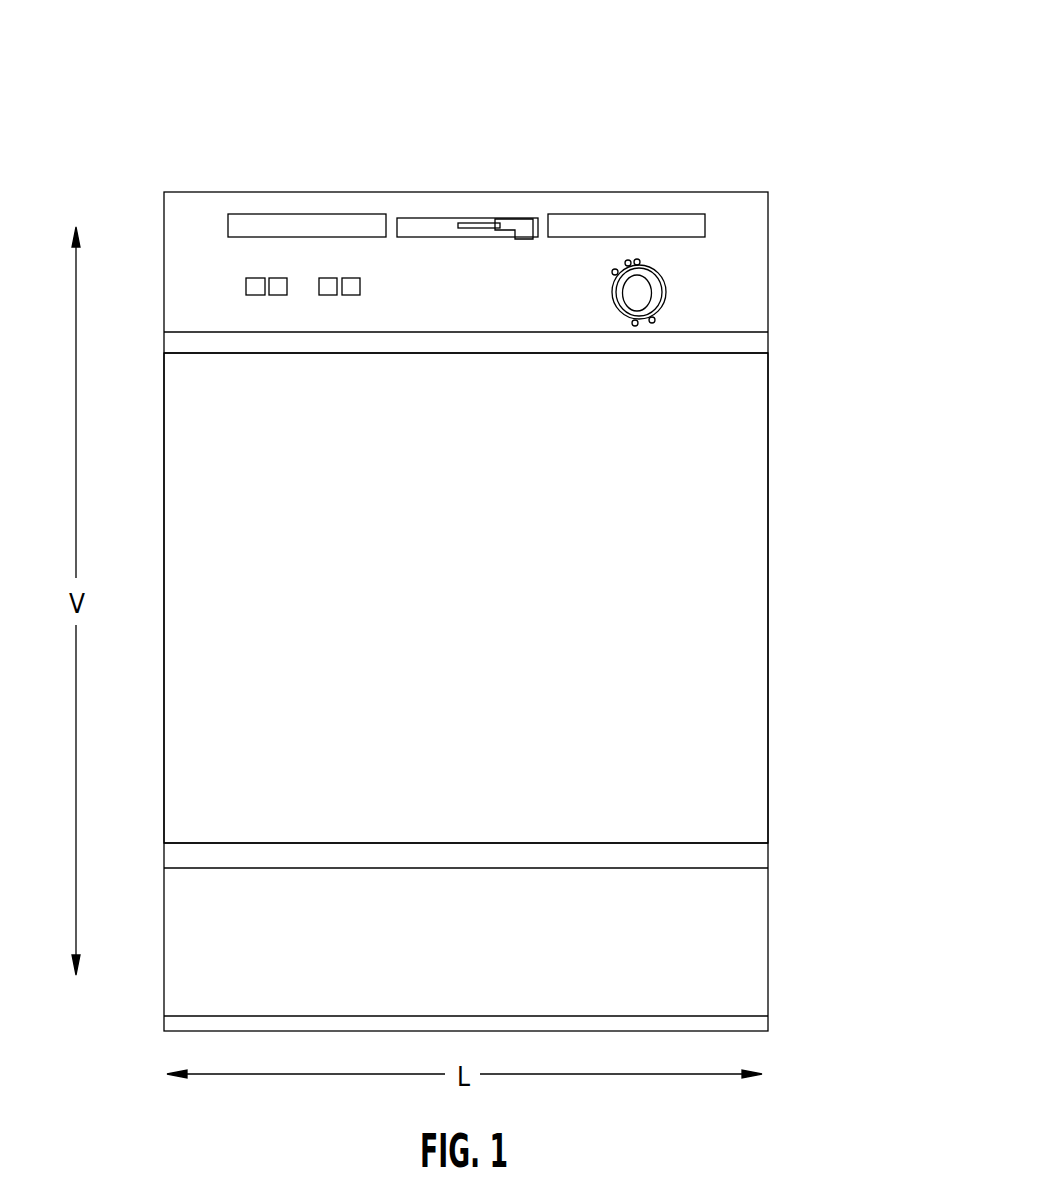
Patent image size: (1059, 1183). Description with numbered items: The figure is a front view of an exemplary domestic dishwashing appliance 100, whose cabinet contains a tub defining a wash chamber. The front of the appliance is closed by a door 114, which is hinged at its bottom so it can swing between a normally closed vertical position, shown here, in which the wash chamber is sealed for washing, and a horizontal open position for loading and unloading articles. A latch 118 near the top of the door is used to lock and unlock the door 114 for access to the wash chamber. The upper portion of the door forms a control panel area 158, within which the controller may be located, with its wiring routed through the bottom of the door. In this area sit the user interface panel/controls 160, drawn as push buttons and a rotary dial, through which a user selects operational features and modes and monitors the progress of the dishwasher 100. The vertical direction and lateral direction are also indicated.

The dishwashing appliance 100 is at (677, 103).
The door 114 is at (713, 575).
The latch 118 is at (528, 218).
The control panel area 158 is at (735, 238).
The user interface panel/controls 160 is at (327, 287).